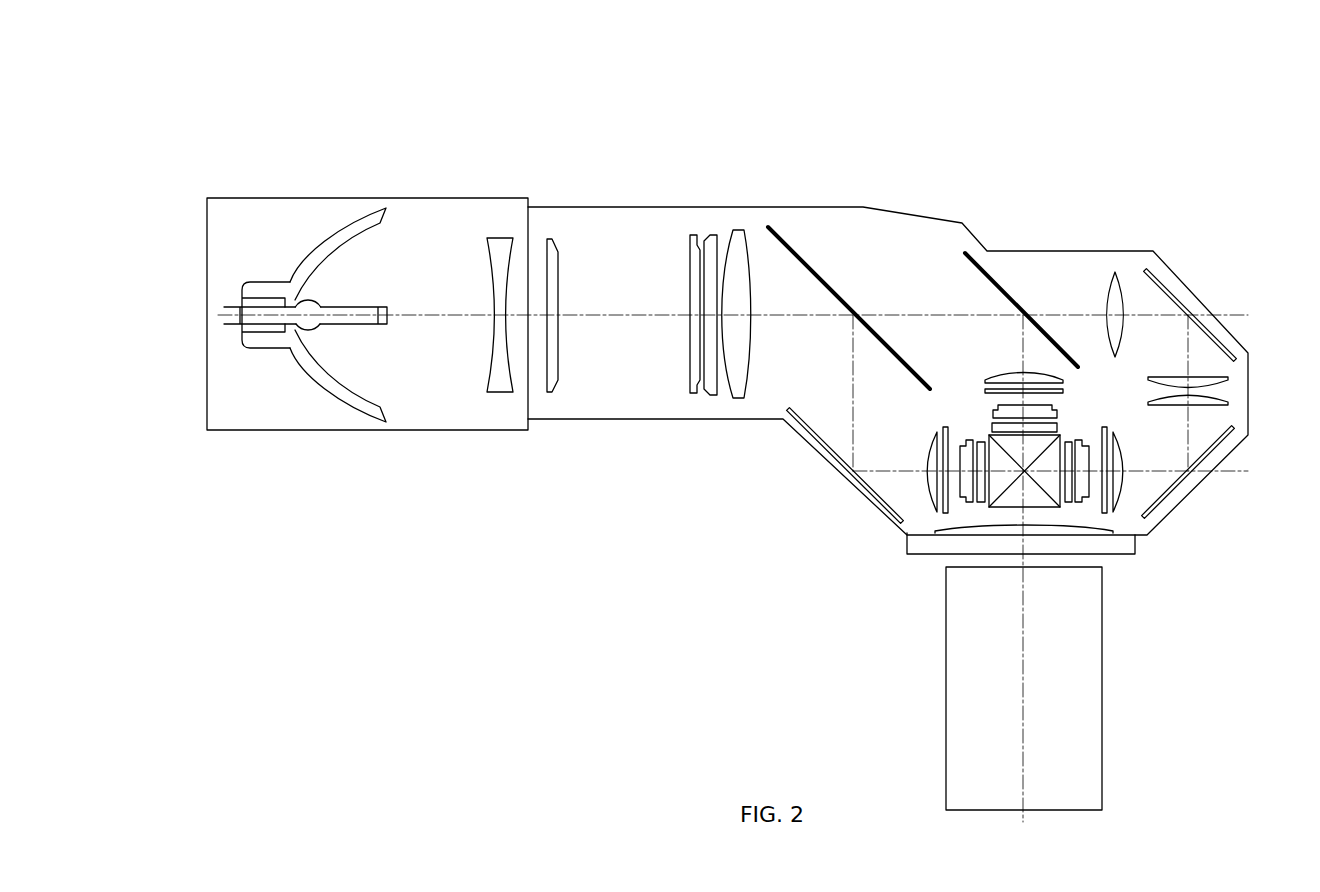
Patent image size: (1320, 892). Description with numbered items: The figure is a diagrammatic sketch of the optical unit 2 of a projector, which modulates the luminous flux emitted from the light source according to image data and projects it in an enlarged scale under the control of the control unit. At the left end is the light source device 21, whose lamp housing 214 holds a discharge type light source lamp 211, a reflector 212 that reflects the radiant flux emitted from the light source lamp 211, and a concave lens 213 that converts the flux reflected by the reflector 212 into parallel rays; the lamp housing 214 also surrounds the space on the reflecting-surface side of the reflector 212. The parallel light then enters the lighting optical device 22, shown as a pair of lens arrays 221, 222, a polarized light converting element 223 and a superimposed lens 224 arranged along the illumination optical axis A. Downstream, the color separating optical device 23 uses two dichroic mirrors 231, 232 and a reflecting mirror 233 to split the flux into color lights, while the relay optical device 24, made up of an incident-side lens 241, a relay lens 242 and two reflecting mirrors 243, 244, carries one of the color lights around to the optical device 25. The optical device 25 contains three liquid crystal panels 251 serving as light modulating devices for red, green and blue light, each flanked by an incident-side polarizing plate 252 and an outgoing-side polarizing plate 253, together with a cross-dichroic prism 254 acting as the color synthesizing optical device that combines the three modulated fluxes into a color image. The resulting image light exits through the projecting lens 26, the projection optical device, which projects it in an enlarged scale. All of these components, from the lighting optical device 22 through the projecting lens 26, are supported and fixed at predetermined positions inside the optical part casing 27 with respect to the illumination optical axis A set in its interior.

The optical unit 2 is at (1040, 132).
The light source device 21 is at (527, 100).
The light source lamp 211 is at (384, 301).
The reflector 212 is at (357, 222).
The concave lens 213 is at (497, 238).
The lamp housing 214 is at (513, 198).
The lighting optical device 22 is at (702, 171).
The lens array 221 is at (558, 279).
The lens array 222 is at (692, 238).
The polarized light converting element 223 is at (715, 235).
The superimposed lens 224 is at (743, 258).
The illumination optical axis A is at (604, 318).
The color separating optical device 23 is at (913, 241).
The dichroic mirror 231 is at (800, 258).
The dichroic mirror 232 is at (1003, 288).
The reflecting mirror 233 is at (812, 428).
The relay optical device 24 is at (1197, 276).
The incident-side lens 241 is at (1115, 272).
The relay lens 242 is at (1228, 398).
The reflecting mirror 243 is at (1219, 342).
The reflecting mirror 244 is at (1213, 449).
The optical device 25 is at (1122, 389).
The liquid crystal panel 251 is at (993, 416).
The incident-side polarizing plate 252 is at (983, 390).
The outgoing-side polarizing plate 253 is at (1057, 427).
The cross-dichroic prism 254 is at (1028, 508).
The projecting lens 26 is at (1102, 716).
The optical part casing 27 is at (1037, 251).